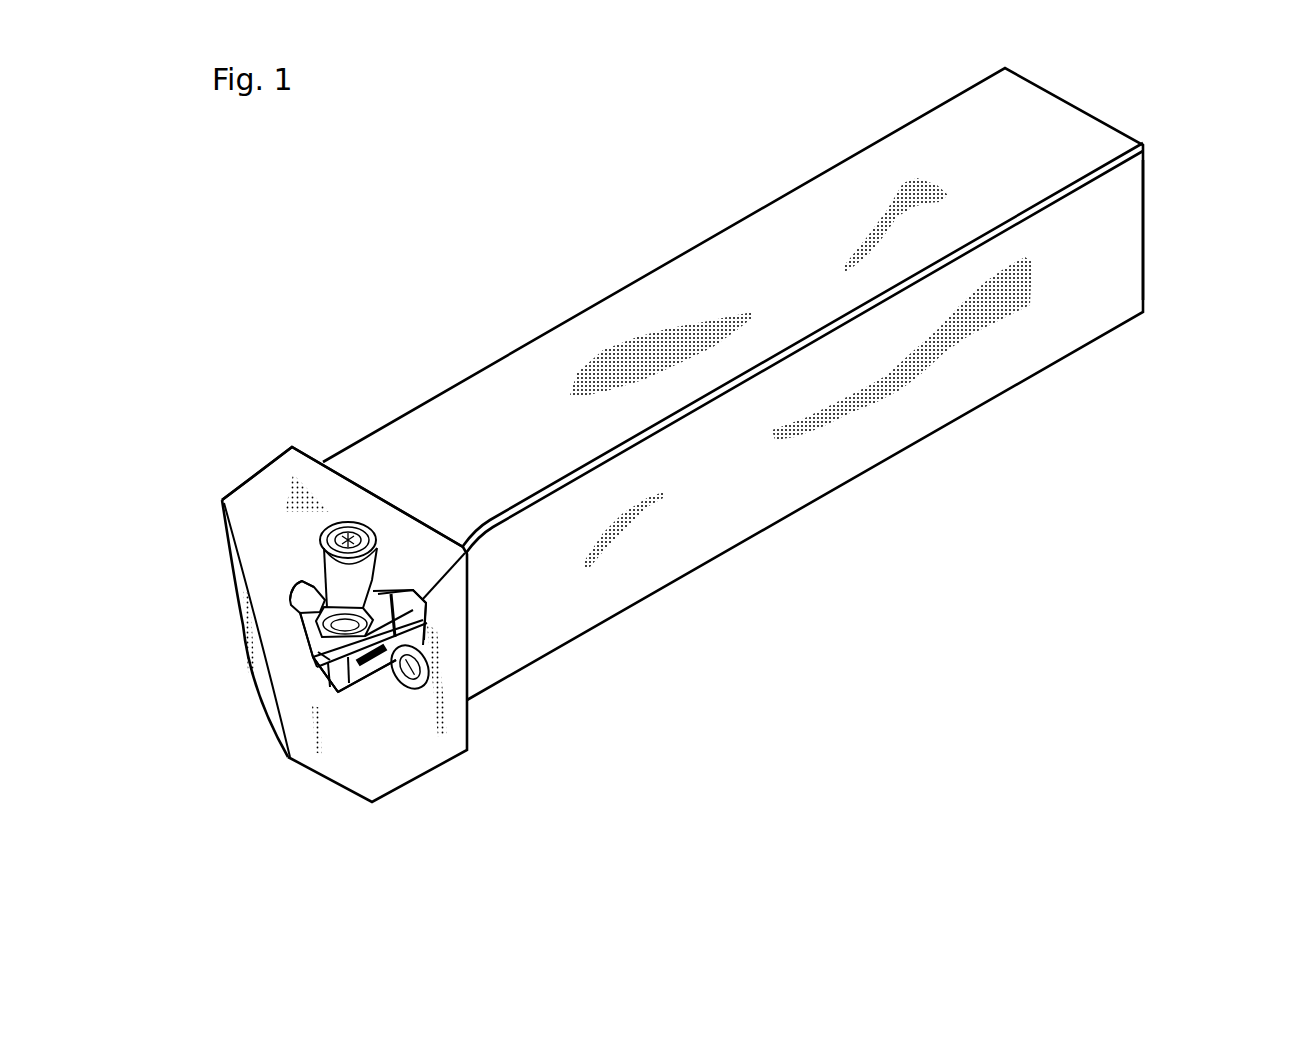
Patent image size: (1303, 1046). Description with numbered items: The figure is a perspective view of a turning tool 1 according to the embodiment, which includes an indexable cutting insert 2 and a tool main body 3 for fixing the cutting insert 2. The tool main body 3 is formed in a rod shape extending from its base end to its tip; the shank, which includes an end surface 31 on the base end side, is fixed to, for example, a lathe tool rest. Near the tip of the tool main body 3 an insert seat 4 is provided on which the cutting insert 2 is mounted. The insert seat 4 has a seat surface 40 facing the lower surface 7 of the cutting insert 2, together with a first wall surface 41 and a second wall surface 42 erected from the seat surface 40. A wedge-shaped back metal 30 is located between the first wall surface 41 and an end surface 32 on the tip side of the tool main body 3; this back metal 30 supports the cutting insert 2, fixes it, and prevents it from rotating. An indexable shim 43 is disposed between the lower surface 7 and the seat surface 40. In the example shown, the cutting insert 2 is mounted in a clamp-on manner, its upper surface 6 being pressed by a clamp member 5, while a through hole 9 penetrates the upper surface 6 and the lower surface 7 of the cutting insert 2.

The turning tool 1 is at (759, 748).
The cutting insert 2 is at (383, 600).
The tool main body 3 is at (822, 468).
The insert seat 4 is at (305, 678).
The clamp member 5 is at (322, 592).
The upper surface 6 is at (300, 612).
The lower surface 7 is at (347, 690).
The through hole 9 is at (330, 682).
The back metal 30 is at (285, 603).
The end surface 31 is at (1148, 228).
The end surface 32 is at (330, 745).
The seat surface 40 is at (428, 648).
The first wall surface 41 is at (307, 582).
The second wall surface 42 is at (417, 592).
The shim 43 is at (378, 688).